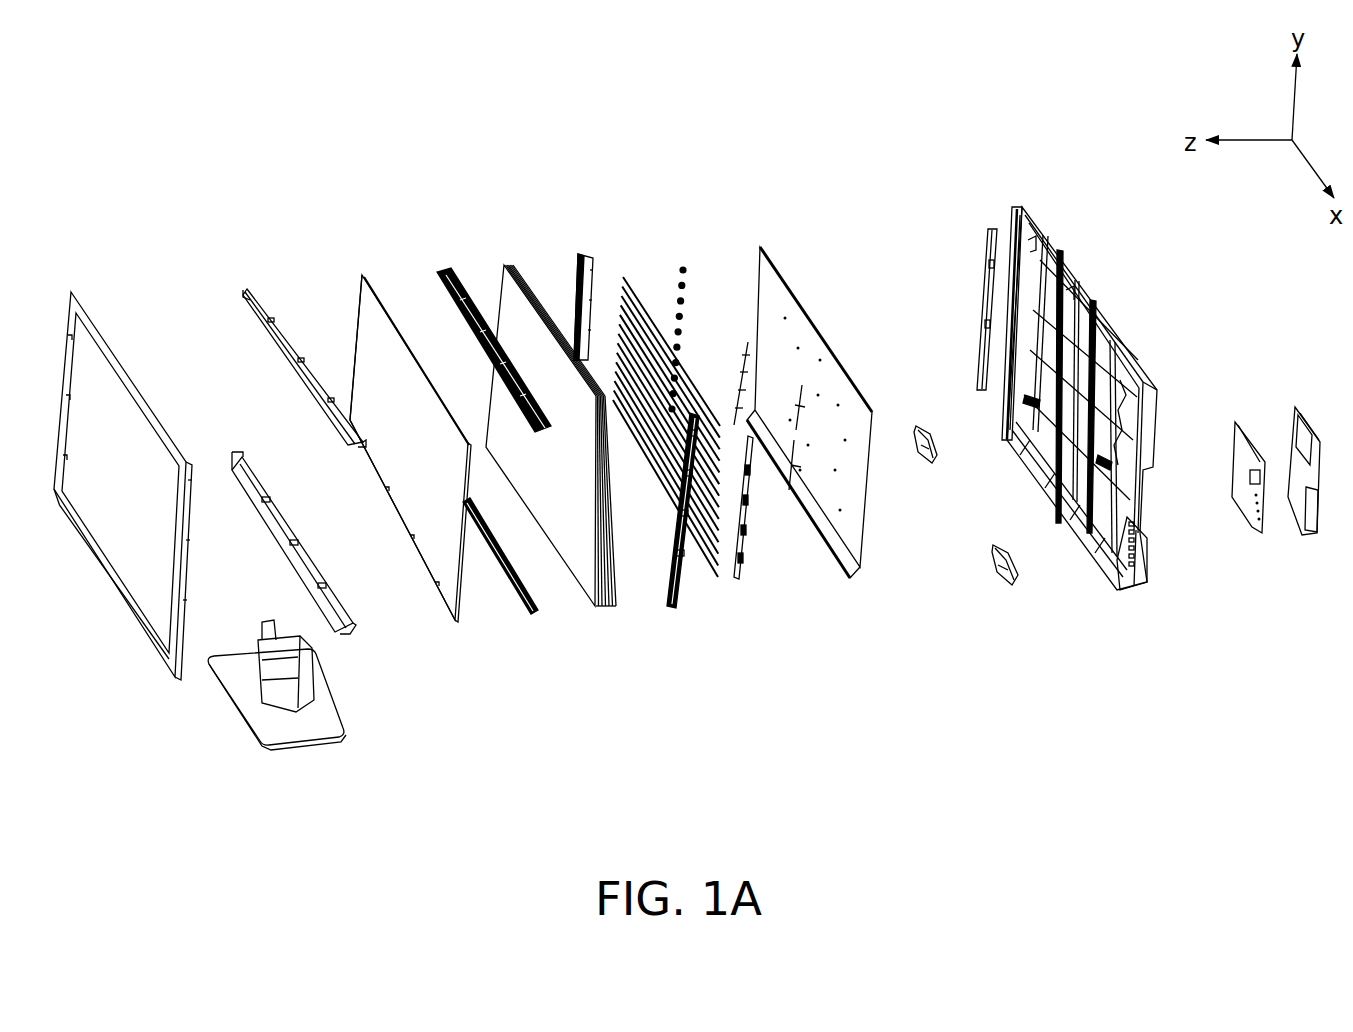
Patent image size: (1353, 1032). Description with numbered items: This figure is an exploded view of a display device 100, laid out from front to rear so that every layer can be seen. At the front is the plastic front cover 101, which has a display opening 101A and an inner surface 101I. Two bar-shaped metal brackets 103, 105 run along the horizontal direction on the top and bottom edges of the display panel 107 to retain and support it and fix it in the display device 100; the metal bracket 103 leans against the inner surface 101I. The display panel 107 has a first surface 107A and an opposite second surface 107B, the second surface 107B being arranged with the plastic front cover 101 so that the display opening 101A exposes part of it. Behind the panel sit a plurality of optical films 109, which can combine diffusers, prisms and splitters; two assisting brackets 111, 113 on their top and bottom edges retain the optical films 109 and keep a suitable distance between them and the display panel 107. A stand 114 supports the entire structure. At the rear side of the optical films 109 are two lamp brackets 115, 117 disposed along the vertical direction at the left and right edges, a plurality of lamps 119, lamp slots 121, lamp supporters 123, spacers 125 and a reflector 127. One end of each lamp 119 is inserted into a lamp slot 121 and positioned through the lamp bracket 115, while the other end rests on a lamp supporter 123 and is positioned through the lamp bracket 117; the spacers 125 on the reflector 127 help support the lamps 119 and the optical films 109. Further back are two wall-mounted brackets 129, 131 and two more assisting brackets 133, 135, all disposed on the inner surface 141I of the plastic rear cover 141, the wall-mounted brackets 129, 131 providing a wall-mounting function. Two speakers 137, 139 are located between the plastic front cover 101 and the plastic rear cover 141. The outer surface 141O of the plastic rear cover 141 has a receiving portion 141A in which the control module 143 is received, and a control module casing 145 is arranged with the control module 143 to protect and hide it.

The display device 100 is at (153, 215).
The plastic front cover 101 is at (151, 453).
The display opening 101A is at (157, 569).
The inner surface of the plastic front cover 101I is at (196, 514).
The metal bracket 103 is at (250, 292).
The metal bracket 105 is at (357, 623).
The display panel 107 is at (364, 405).
The first surface 107A is at (383, 297).
The second surface 107B is at (357, 335).
The optical films 109 is at (502, 263).
The assisting bracket 111 is at (443, 270).
The assisting bracket 113 is at (533, 614).
The stand 114 is at (300, 727).
The lamp bracket 115 is at (592, 252).
The lamp bracket 117 is at (673, 610).
The lamps 119 is at (630, 290).
The lamp slots 121 is at (683, 266).
The lamp supporters 123 is at (737, 580).
The spacers 125 is at (748, 342).
The reflector 127 is at (777, 263).
The wall-mounted bracket 129 is at (1007, 441).
The wall-mounted bracket 131 is at (1058, 523).
The assisting bracket 133 is at (988, 229).
The assisting bracket 135 is at (1086, 548).
The speaker 137 is at (922, 424).
The speaker 139 is at (1002, 586).
The plastic rear cover 141 is at (1105, 371).
The outer surface 141O is at (1120, 324).
The inner surface 141I is at (1093, 385).
The receiving portion 141A is at (1150, 532).
The control module 143 is at (1250, 530).
The control module casing 145 is at (1300, 537).